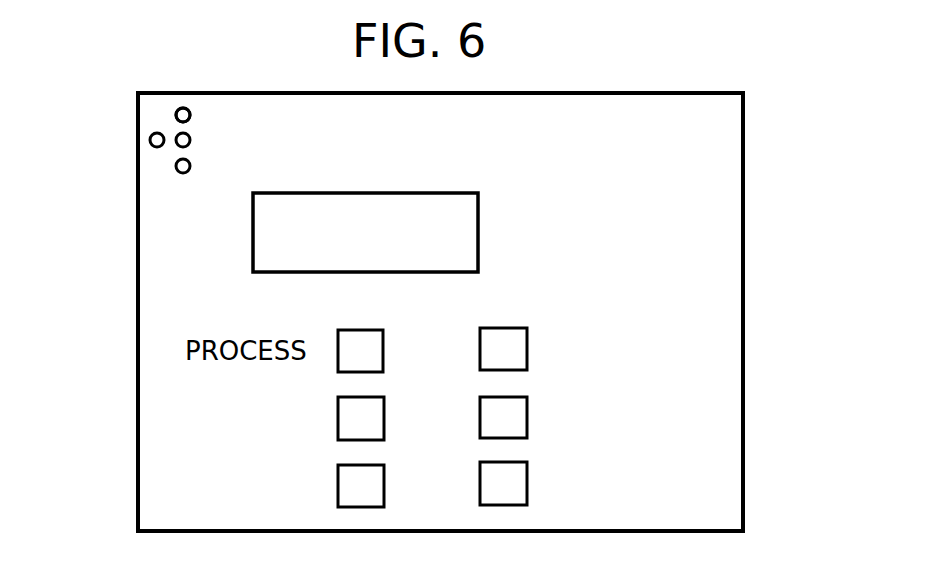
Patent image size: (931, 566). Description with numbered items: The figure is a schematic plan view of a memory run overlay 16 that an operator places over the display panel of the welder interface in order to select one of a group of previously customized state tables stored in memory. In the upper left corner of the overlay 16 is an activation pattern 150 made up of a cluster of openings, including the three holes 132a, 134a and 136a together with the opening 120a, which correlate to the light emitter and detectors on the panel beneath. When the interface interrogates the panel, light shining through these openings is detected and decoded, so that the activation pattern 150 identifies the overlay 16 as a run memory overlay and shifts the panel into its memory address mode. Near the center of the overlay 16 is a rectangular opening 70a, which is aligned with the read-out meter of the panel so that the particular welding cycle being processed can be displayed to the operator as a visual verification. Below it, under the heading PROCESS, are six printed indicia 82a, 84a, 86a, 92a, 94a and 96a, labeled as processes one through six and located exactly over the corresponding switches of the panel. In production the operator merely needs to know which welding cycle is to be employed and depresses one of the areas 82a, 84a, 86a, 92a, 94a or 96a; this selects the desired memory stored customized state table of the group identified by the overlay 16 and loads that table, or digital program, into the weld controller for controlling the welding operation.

The overlay 16 is at (748, 110).
The hole 132a is at (183, 108).
The activation pattern 150 is at (208, 105).
The hole 134a is at (150, 140).
The opening 120a is at (190, 140).
The hole 136a is at (178, 171).
The opening 70a is at (460, 242).
The indicia 82a is at (360, 342).
The indicia 84a is at (349, 420).
The indicia 86a is at (349, 481).
The indicia 92a is at (508, 334).
The indicia 94a is at (515, 404).
The indicia 96a is at (515, 470).